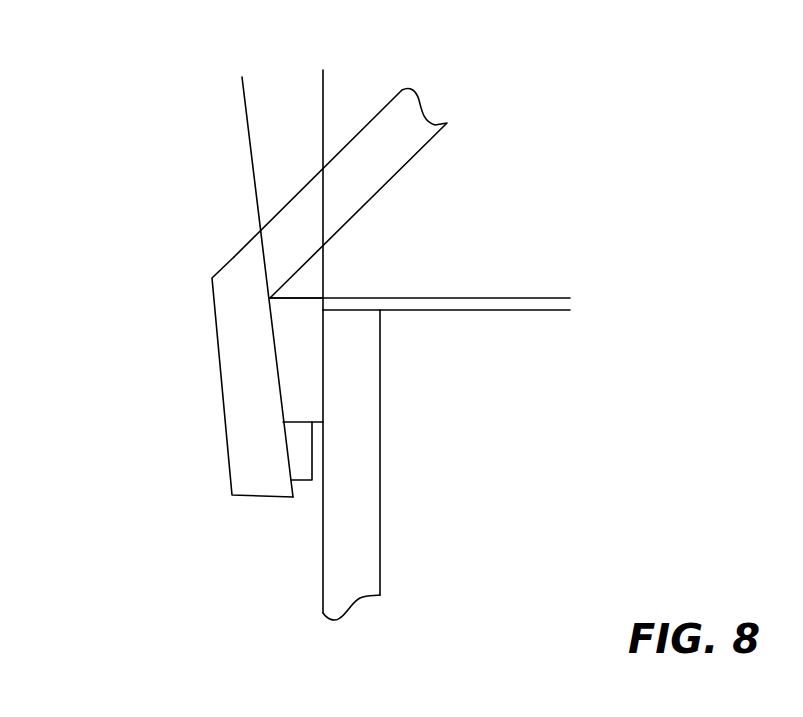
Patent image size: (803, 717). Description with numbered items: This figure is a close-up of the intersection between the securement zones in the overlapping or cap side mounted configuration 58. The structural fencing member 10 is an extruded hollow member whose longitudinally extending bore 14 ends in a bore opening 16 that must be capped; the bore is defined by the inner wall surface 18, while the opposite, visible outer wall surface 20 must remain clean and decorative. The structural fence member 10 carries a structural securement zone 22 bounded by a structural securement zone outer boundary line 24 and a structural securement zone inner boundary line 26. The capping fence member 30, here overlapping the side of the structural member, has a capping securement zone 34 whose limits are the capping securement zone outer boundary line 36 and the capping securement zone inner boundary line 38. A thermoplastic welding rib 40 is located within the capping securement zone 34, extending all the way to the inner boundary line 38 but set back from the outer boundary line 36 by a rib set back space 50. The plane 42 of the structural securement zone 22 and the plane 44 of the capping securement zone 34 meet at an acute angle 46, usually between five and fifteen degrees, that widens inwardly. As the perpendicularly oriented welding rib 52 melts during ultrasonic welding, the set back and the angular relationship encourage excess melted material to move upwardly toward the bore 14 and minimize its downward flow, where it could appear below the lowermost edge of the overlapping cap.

The structural fencing member 10 is at (357, 485).
The longitudinally extending bore 14 is at (623, 425).
The bore opening 16 is at (487, 310).
The inner wall surface 18 is at (383, 372).
The outer wall surface 20 is at (323, 337).
The structural securement zone 22 is at (323, 449).
The structural securement zone outer boundary line 24 is at (312, 480).
The structural securement zone inner boundary line 26 is at (323, 421).
The capping fence member 30 is at (392, 167).
The capping securement zone 34 is at (288, 460).
The capping securement zone outer boundary line 36 is at (267, 497).
The capping securement zone inner boundary line 38 is at (283, 422).
The welding rib 40 is at (293, 447).
The plane of the structural securement zone 42 is at (352, 100).
The plane of the capping securement zone 44 is at (241, 105).
The angle 46 is at (298, 117).
The rib set back space 50 is at (282, 478).
The perpendicularly oriented welding rib 52 is at (301, 472).
The cap side mounted or overlapping configuration 58 is at (237, 265).